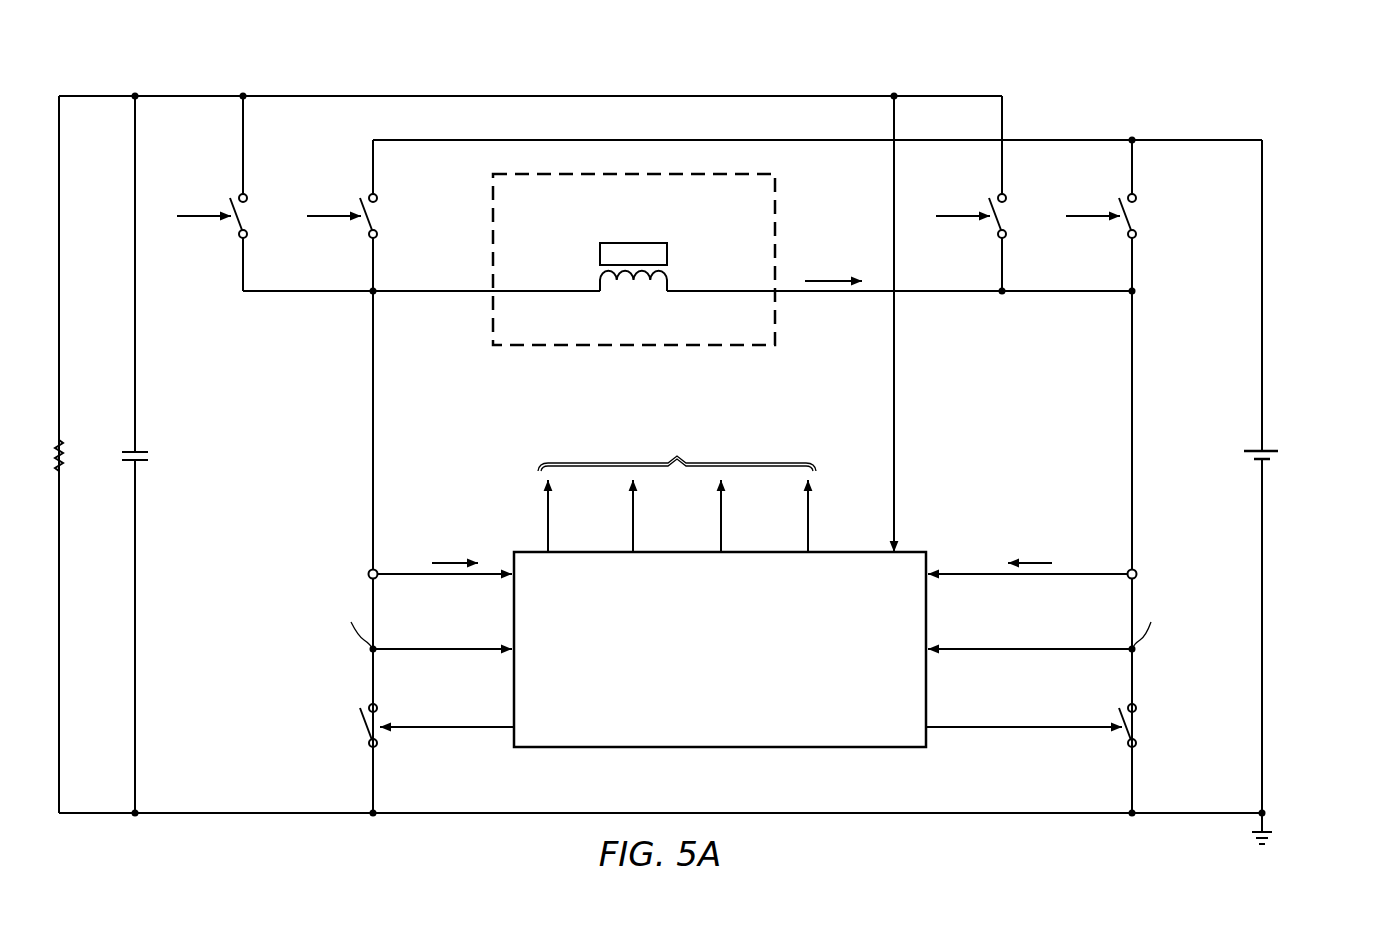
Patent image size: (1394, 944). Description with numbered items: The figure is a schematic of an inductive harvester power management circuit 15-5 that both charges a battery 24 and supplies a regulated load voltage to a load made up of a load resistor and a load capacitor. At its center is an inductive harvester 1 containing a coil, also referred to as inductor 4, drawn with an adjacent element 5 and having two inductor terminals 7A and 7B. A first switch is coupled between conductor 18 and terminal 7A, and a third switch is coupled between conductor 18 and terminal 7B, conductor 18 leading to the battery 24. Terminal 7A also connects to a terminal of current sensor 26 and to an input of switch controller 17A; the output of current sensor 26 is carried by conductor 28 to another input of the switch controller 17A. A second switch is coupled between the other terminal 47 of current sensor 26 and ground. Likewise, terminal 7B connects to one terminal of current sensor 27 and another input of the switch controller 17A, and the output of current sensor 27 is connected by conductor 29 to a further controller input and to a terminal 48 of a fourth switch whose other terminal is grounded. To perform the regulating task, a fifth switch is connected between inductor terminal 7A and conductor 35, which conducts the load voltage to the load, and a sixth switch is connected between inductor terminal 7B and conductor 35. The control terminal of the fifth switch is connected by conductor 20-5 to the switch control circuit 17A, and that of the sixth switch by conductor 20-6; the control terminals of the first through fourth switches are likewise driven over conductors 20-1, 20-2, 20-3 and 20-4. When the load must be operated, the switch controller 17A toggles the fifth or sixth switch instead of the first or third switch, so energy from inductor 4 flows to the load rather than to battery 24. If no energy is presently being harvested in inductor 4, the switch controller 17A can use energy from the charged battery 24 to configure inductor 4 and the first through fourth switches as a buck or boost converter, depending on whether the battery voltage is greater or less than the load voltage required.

The energy harvesting circuit 15-5 is at (1096, 60).
The conductor 35 is at (320, 96).
The conductor 18 is at (1196, 140).
The switch S1 control signal 20-1 is at (330, 216).
The switch S2 control signal 20-2 is at (449, 728).
The switch S3 control signal 20-3 is at (1089, 216).
The switch S4 control signal 20-4 is at (1031, 728).
The conductor 20-5 is at (200, 216).
The conductor 20-6 is at (959, 216).
The inductive harvester 1 is at (778, 222).
The inductor 4 is at (600, 284).
The inductor core 5 is at (667, 257).
The terminal of inductor 7A is at (371, 295).
The terminal of inductor 7B is at (1129, 295).
The battery 24 is at (1241, 455).
The current sensor 26 is at (368, 573).
The current sensor 27 is at (1137, 573).
The conductor 28 is at (411, 574).
The conductor 29 is at (957, 574).
The terminal of current sensor 47 is at (371, 684).
The terminal of switch S4 48 is at (1134, 684).
The switch controller 17A is at (699, 686).